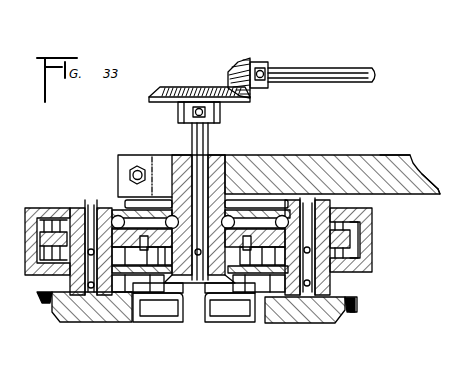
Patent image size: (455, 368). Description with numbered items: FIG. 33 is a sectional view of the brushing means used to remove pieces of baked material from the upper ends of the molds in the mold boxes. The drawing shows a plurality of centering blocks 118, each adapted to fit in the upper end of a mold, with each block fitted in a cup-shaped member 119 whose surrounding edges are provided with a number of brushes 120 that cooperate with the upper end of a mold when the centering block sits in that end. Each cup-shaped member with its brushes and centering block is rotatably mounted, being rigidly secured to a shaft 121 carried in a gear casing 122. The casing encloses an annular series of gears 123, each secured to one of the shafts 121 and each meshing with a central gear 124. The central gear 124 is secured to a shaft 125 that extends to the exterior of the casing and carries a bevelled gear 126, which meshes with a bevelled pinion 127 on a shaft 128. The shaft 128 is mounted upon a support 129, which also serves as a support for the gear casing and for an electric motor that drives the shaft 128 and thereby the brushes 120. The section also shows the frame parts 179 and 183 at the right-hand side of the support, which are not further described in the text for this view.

The centering block 118 is at (98, 323).
The cup-shaped member 119 is at (43, 298).
The brushes 120 is at (197, 318).
The shaft 121 is at (316, 263).
The gear casing 122 is at (372, 232).
The gears 123 is at (73, 228).
The central gear 124 is at (243, 240).
The shaft 125 is at (208, 148).
The bevelled gear 126 is at (183, 83).
The bevelled pinion 127 is at (237, 62).
The shaft 128 is at (315, 68).
The support 129 is at (385, 153).
The frame member 179 is at (438, 156).
The frame member 183 is at (442, 133).